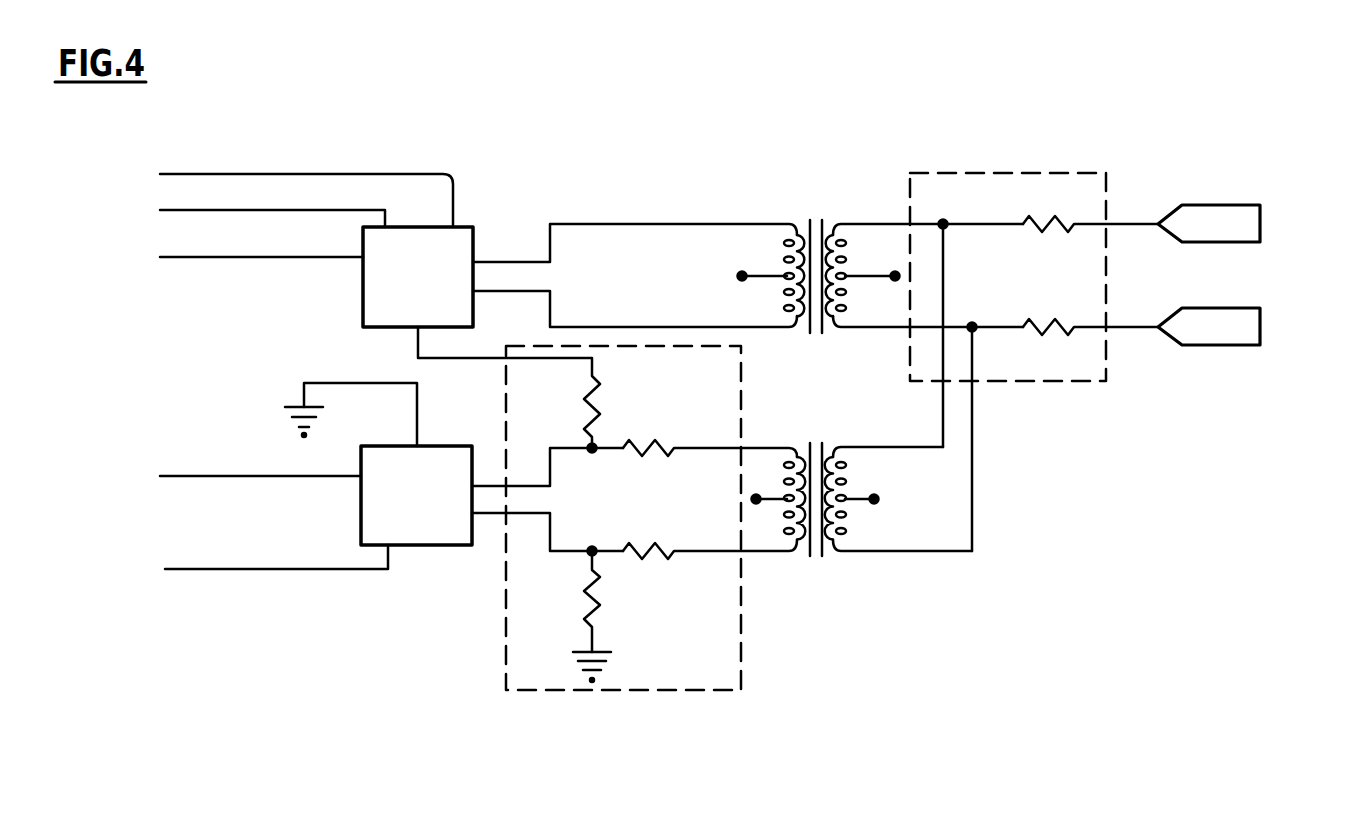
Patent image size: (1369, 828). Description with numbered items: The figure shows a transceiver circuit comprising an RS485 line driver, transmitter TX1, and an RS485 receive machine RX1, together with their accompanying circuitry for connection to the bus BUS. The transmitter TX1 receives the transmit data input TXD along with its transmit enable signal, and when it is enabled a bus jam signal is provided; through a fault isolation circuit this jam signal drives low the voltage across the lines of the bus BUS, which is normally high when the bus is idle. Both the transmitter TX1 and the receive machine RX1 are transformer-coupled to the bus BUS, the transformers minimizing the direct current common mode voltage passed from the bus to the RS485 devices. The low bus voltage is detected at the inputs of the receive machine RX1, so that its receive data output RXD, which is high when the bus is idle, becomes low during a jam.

The first transmitter TX1 is at (418, 277).
The first receive machine RX1 is at (416, 495).
The bus BUS is at (1280, 195).
The transmit data input TXD is at (261, 275).
The receive data output RXD is at (260, 460).